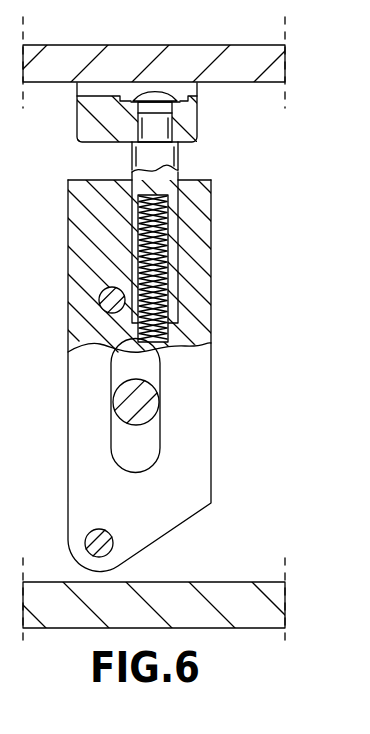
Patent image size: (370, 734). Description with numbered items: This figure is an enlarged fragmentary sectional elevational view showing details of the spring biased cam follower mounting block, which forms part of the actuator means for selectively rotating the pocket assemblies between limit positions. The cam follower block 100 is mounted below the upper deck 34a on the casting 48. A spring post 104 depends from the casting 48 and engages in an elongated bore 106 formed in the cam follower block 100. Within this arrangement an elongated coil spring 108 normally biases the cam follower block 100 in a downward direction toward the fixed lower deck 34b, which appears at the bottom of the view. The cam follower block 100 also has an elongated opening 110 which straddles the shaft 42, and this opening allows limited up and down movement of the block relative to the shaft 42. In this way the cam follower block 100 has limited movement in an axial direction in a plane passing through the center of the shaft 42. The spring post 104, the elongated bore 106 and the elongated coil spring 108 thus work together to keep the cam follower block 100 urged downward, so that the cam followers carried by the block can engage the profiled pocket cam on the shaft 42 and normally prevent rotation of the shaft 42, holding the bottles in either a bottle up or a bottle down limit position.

The upper deck 34a is at (241, 45).
The fixed lower deck 34b is at (222, 582).
The casting 48 is at (85, 115).
The spring post 104 is at (180, 160).
The cam follower block 100 is at (83, 238).
The elongated bore 106 is at (176, 303).
The elongated coil spring 108 is at (170, 233).
The shaft 42 is at (146, 392).
The elongated opening 110 is at (154, 430).